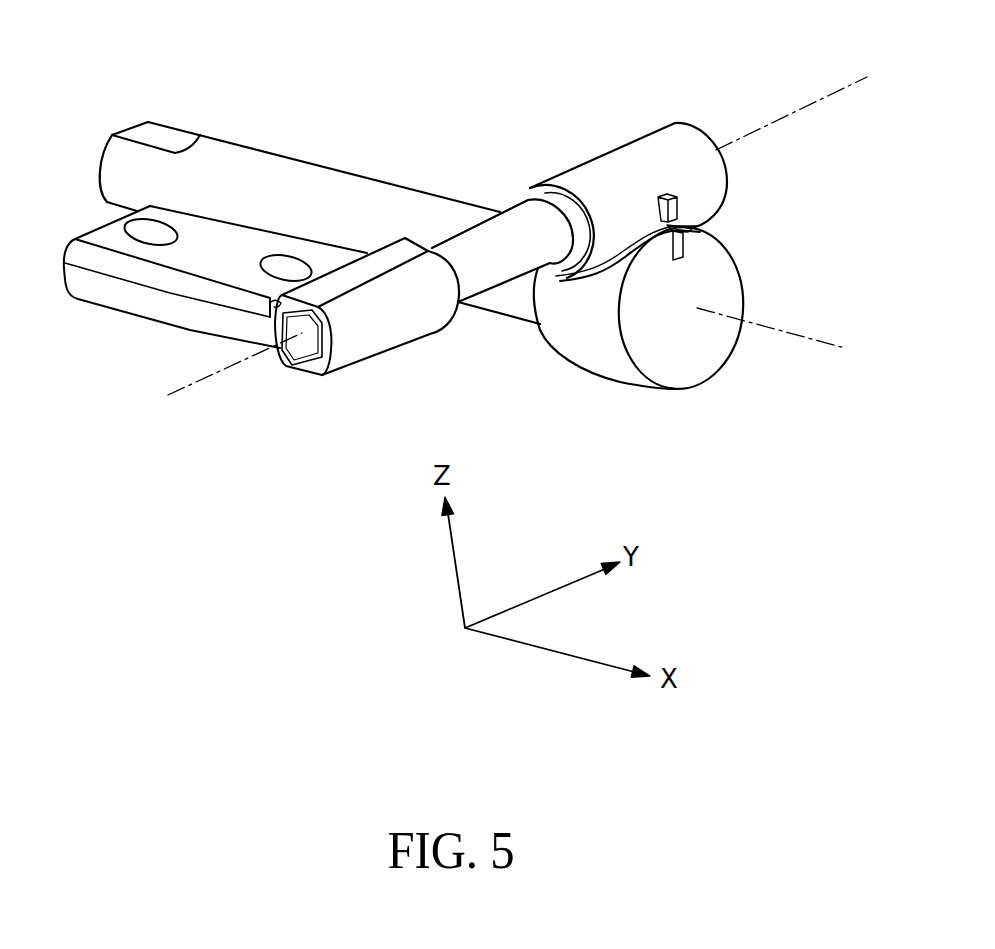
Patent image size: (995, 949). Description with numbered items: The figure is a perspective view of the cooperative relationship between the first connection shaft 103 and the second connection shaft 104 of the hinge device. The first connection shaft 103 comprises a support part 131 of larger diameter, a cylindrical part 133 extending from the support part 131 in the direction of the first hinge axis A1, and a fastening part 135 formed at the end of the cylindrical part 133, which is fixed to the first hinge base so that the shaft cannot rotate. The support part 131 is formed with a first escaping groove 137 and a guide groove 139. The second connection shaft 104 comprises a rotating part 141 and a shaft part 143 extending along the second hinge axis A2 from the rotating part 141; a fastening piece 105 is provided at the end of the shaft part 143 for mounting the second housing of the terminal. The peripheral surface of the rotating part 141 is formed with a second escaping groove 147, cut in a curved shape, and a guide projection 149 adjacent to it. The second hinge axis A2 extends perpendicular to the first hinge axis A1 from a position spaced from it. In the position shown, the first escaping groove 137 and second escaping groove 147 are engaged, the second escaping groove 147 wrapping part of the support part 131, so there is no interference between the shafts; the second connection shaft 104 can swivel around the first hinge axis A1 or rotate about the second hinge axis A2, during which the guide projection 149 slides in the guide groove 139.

The first connection shaft 103 is at (652, 338).
The second connection shaft 104 is at (688, 164).
The fastening piece 105 is at (160, 319).
The support part 131 is at (608, 356).
The cylindrical part 133 is at (318, 183).
The fastening part 135 is at (170, 138).
The first escaping groove 137 is at (643, 262).
The guide groove 139 is at (686, 252).
The rotating part 141 is at (683, 140).
The shaft part 143 is at (520, 218).
The second escaping groove 147 is at (638, 225).
The guide projection 149 is at (678, 196).
The first hinge axis A1 is at (823, 338).
The second hinge axis A2 is at (196, 383).